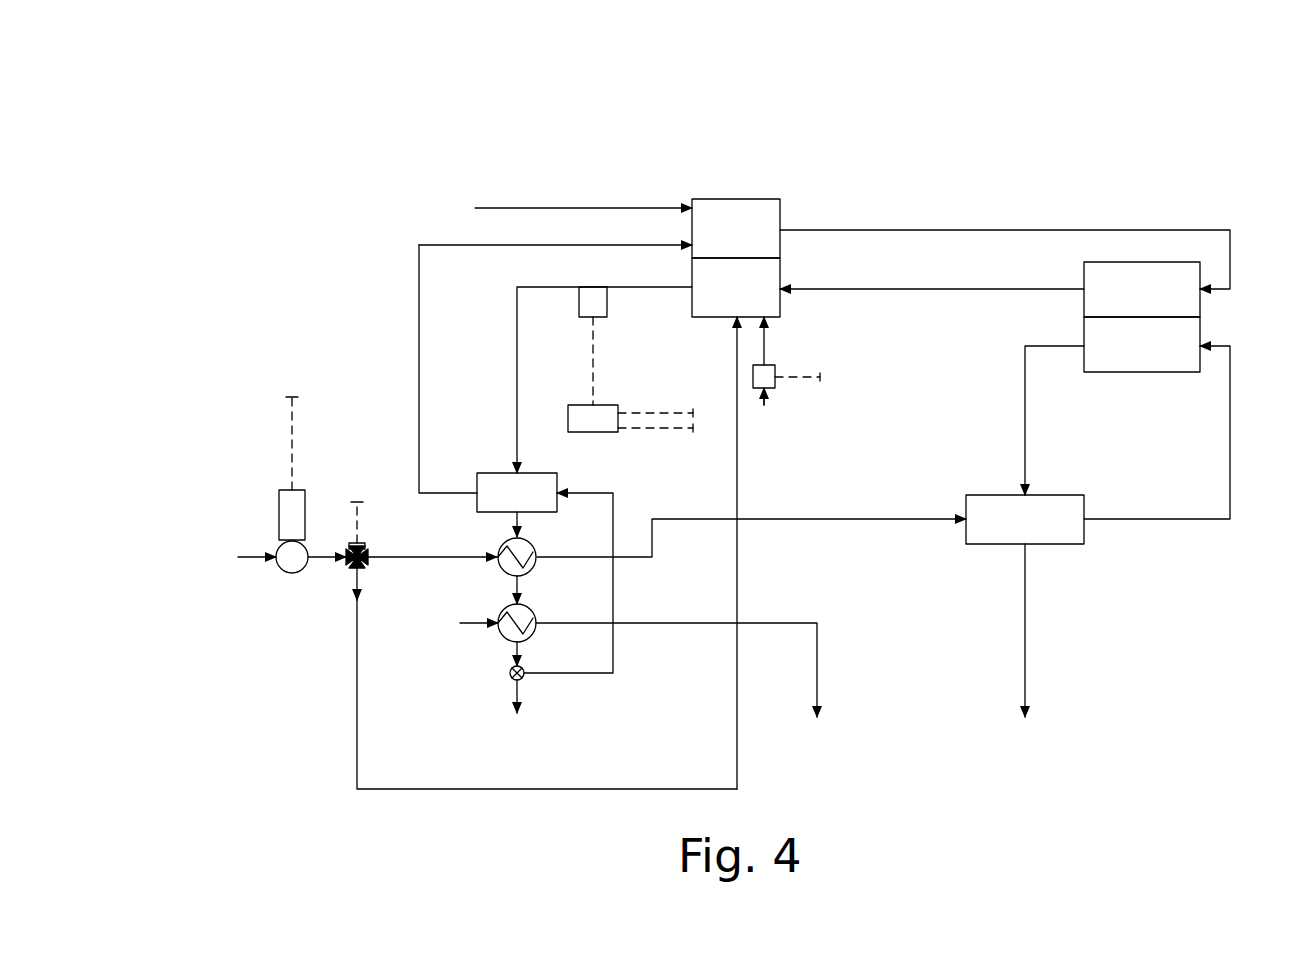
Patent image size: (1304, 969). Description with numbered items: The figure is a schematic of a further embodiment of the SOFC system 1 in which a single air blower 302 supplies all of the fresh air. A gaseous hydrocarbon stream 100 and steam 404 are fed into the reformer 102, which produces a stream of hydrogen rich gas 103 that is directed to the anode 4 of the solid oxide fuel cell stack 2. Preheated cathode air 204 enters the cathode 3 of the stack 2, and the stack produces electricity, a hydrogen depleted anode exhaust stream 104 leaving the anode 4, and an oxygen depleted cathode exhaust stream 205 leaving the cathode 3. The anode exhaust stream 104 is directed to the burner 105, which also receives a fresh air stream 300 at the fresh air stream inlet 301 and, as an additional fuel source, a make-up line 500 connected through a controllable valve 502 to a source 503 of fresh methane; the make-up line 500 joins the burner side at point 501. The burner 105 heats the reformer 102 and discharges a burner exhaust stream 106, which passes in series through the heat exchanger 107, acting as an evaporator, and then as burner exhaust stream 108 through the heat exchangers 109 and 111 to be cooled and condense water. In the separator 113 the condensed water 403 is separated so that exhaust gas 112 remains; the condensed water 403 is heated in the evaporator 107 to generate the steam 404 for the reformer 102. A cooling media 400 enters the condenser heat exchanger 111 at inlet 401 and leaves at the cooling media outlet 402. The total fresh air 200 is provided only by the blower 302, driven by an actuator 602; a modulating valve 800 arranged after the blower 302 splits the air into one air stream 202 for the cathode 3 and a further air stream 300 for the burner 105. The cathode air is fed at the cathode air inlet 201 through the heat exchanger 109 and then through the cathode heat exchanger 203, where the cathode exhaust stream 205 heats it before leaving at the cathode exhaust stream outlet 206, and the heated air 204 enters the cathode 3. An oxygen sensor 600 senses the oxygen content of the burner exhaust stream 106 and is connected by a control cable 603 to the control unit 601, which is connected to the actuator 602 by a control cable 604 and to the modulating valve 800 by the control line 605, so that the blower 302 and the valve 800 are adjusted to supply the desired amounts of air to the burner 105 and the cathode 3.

The SOFC system 1 is at (1078, 150).
The solid oxide fuel cell stack 2 is at (1084, 340).
The cathode 3 is at (1149, 356).
The anode 4 is at (1149, 302).
The gaseous hydrocarbon stream 100 is at (573, 207).
The reformer 102 is at (754, 240).
The stream of hydrogen rich gas 103 is at (913, 229).
The anode exhaust stream 104 is at (930, 291).
The burner 105 is at (754, 298).
The burner exhaust stream 106 is at (517, 371).
The heat exchanger 107 is at (535, 504).
The burner exhaust stream 108 is at (521, 518).
The heat exchanger 109 is at (528, 570).
The heat exchanger 111 is at (528, 636).
The exhaust gas 112 is at (521, 688).
The separator 113 is at (509, 676).
The air stream 200 is at (238, 557).
The cathode air inlet 201 is at (496, 562).
The air stream for the cathode 202 is at (405, 560).
The cathode heat exchanger 203 is at (1043, 530).
The preheated cathode air 204 is at (1230, 458).
The cathode exhaust stream 205 is at (1025, 470).
The cathode exhaust stream outlet 206 is at (1025, 595).
The fresh air stream 300 is at (737, 360).
The fresh air stream inlet 301 is at (720, 318).
The air blower 302 is at (291, 563).
The cooling media 400 is at (460, 623).
The coolant line 401 is at (497, 628).
The cooling media outlet 402 is at (817, 687).
The condensed water 403 is at (613, 590).
The steam 404 is at (419, 418).
The make-up line 500 is at (764, 340).
The injector 501 is at (780, 317).
The controllable valve 502 is at (775, 372).
The source of fresh methane 503 is at (766, 400).
The oxygen sensor 600 is at (593, 302).
The control unit 601 is at (592, 420).
The actuator 602 is at (279, 512).
The control cable 603 is at (597, 364).
The control cable 604 is at (641, 433).
The control line 605 is at (705, 398).
The modulating valve 800 is at (353, 569).